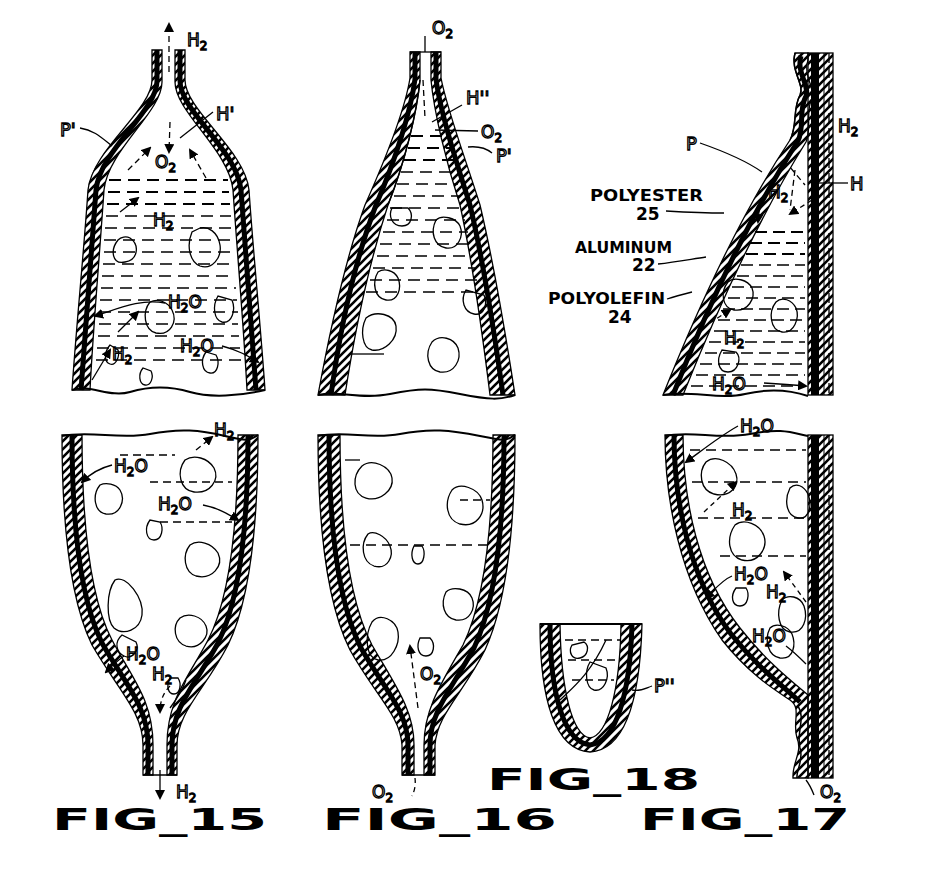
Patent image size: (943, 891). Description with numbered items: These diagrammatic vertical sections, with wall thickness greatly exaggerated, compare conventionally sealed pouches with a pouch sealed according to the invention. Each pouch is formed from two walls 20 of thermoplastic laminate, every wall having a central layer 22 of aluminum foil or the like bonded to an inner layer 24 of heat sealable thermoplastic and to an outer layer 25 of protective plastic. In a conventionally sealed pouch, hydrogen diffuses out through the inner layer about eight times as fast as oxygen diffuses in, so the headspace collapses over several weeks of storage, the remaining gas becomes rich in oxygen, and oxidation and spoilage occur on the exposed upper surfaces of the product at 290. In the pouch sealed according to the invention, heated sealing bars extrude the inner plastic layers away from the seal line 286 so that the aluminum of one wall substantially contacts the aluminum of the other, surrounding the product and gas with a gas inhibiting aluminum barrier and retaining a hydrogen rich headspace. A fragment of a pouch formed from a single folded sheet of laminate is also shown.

In FIG. 17, the wall 20 is at (842, 415).
In FIG. 17, the central layer 22 is at (826, 266).
In FIG. 17, the inner layer 24 is at (828, 298).
In FIG. 17, the outer layer 25 is at (834, 344).
In FIG. 17, the seal line 286 is at (798, 94).
In FIG. 16, the exposed surfaces of the product 290 is at (414, 134).